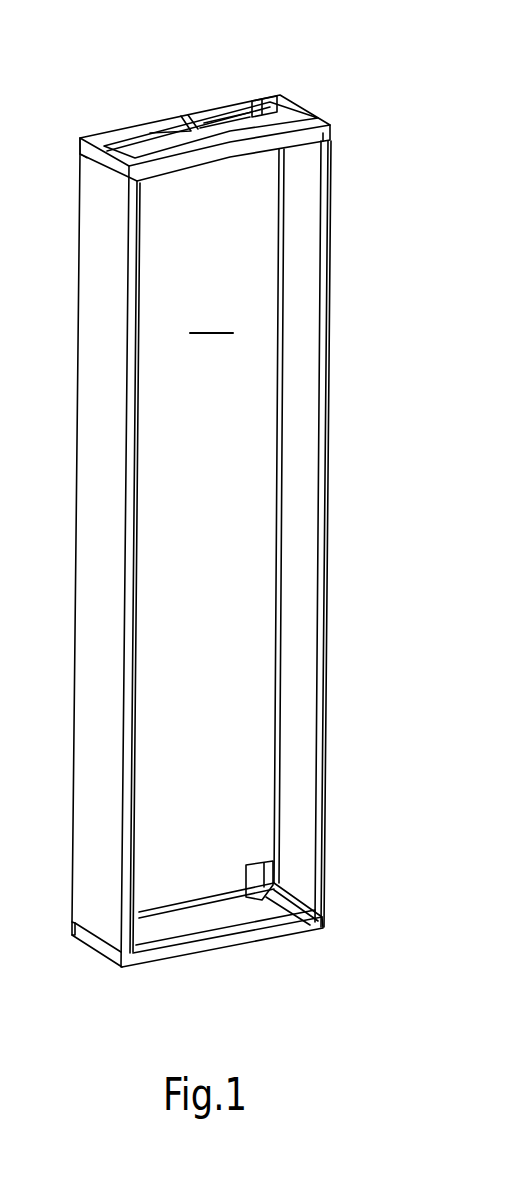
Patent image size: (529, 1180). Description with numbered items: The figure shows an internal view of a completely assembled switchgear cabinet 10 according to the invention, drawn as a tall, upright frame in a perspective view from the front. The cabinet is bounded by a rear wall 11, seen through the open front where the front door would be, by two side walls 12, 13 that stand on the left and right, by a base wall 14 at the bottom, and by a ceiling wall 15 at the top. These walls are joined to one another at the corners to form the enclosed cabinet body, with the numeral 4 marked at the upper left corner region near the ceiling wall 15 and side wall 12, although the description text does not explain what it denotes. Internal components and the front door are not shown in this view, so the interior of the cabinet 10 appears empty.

The corner connector 4 is at (43, 159).
The switchgear cabinet 10 is at (193, 537).
The rear wall 11 is at (211, 315).
The side wall 12 is at (98, 593).
The side wall 13 is at (302, 540).
The base wall 14 is at (212, 920).
The ceiling wall 15 is at (187, 145).